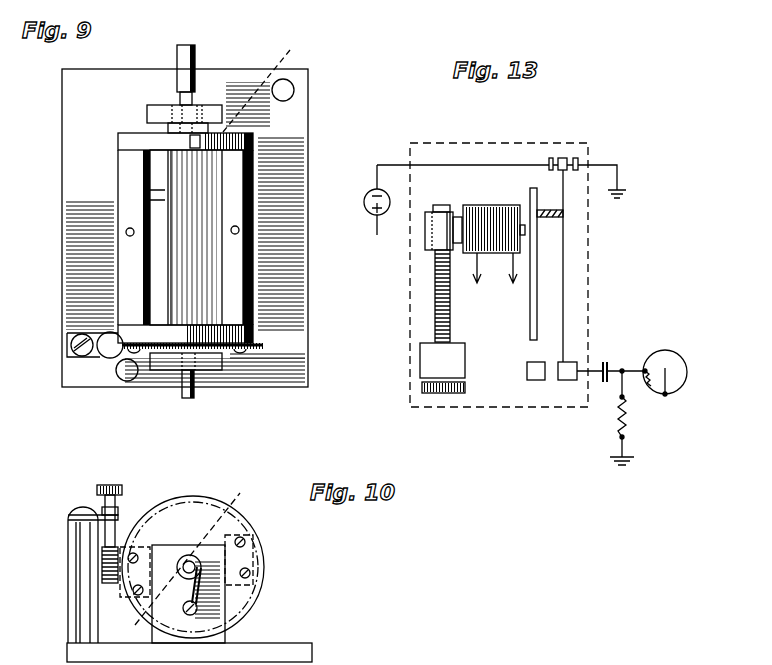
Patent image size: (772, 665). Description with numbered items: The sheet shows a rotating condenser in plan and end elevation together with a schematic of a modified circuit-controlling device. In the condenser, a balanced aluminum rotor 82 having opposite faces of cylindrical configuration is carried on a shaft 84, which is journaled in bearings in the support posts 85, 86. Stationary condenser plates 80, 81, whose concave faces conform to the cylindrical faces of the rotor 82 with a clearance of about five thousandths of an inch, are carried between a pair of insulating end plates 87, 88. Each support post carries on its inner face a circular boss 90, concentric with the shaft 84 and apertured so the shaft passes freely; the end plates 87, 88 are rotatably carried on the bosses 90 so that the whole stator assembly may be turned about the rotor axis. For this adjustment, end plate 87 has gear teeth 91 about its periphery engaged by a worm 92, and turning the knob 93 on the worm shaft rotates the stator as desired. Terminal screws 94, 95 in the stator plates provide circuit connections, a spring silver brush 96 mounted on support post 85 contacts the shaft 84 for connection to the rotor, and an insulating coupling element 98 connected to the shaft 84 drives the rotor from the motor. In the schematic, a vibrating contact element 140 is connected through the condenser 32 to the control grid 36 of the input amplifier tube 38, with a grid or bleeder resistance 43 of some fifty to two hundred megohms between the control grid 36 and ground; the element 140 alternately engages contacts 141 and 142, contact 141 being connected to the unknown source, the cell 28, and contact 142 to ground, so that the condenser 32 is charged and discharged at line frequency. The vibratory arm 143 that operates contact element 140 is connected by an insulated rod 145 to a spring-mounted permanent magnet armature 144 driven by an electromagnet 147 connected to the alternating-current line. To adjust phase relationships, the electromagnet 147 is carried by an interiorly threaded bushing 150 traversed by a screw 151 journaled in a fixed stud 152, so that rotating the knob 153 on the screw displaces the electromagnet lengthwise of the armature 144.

In FIG. 13, the cell 28 is at (372, 215).
In FIG. 13, the condenser 32 is at (605, 357).
In FIG. 13, the control grid 36 is at (647, 378).
In FIG. 13, the vacuum tube 38 is at (658, 352).
In FIG. 13, the grid or bleeder resistance 43 is at (610, 423).
In FIG. 9, the stationary condenser plate 80 is at (127, 185).
In FIG. 9, the stationary condenser plate 81 is at (238, 167).
In FIG. 9, the rotor 82 is at (155, 263).
In FIG. 10, the rotor 82 is at (212, 500).
In FIG. 9, the shaft 84 is at (265, 86).
In FIG. 10, the shaft 84 is at (174, 565).
In FIG. 9, the support post 85 is at (222, 362).
In FIG. 10, the support post 85 is at (225, 635).
In FIG. 9, the support post 86 is at (155, 107).
In FIG. 9, the end plate 87 is at (253, 338).
In FIG. 10, the end plate 87 is at (165, 507).
In FIG. 9, the end plate 88 is at (118, 137).
In FIG. 9, the circular boss 90 is at (172, 128).
In FIG. 9, the gear teeth 91 is at (312, 345).
In FIG. 10, the gear teeth 91 is at (245, 518).
In FIG. 10, the worm 92 is at (102, 560).
In FIG. 9, the knob 93 is at (110, 352).
In FIG. 10, the knob 93 is at (97, 490).
In FIG. 9, the terminal screw 94 is at (126, 234).
In FIG. 9, the terminal screw 95 is at (239, 228).
In FIG. 9, the brush 96 is at (196, 388).
In FIG. 10, the brush 96 is at (200, 590).
In FIG. 9, the coupling element 98 is at (195, 55).
In FIG. 13, the vibrating contact element 140 is at (565, 157).
In FIG. 13, the contact 141 is at (551, 158).
In FIG. 13, the contact 142 is at (578, 158).
In FIG. 13, the vibratory arm 143 is at (565, 258).
In FIG. 13, the permanent magnet armature 144 is at (530, 195).
In FIG. 13, the insulated rod 145 is at (547, 205).
In FIG. 13, the electromagnet 147 is at (495, 255).
In FIG. 13, the interiorly threaded bushing 150 is at (425, 240).
In FIG. 13, the screw 151 is at (435, 278).
In FIG. 13, the fixed stud 152 is at (425, 365).
In FIG. 13, the knob 153 is at (420, 385).